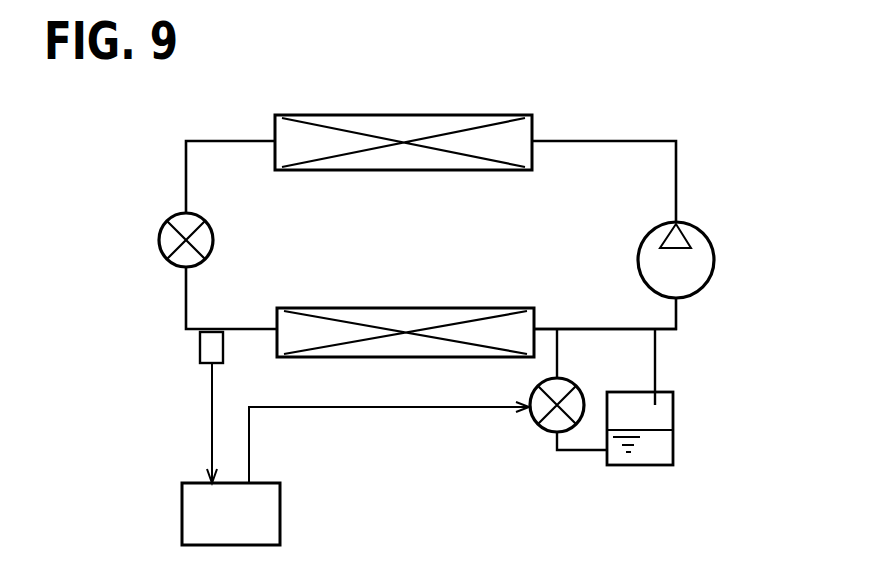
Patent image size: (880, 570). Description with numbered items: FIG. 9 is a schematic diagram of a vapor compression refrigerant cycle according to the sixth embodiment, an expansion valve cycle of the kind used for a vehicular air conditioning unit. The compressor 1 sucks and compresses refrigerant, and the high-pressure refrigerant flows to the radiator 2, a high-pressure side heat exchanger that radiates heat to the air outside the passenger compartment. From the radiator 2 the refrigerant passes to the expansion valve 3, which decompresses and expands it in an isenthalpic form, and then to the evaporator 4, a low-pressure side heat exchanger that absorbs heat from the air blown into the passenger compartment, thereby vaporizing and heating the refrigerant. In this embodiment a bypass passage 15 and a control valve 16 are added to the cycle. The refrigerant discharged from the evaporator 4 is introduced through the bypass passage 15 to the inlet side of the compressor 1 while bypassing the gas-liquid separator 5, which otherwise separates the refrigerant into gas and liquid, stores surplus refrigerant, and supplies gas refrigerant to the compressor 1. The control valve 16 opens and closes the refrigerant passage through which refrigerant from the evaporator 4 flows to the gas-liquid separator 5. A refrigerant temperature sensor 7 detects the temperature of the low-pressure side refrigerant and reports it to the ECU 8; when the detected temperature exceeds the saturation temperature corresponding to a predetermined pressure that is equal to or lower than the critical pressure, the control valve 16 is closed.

The compressor 1 is at (716, 258).
The radiator 2 is at (468, 115).
The expansion valve 3 is at (158, 238).
The evaporator 4 is at (468, 308).
The gas-liquid separator 5 is at (675, 436).
The refrigerant temperature sensor 7 is at (200, 350).
The ECU 8 is at (282, 514).
The bypass passage 15 is at (593, 329).
The control valve 16 is at (547, 432).